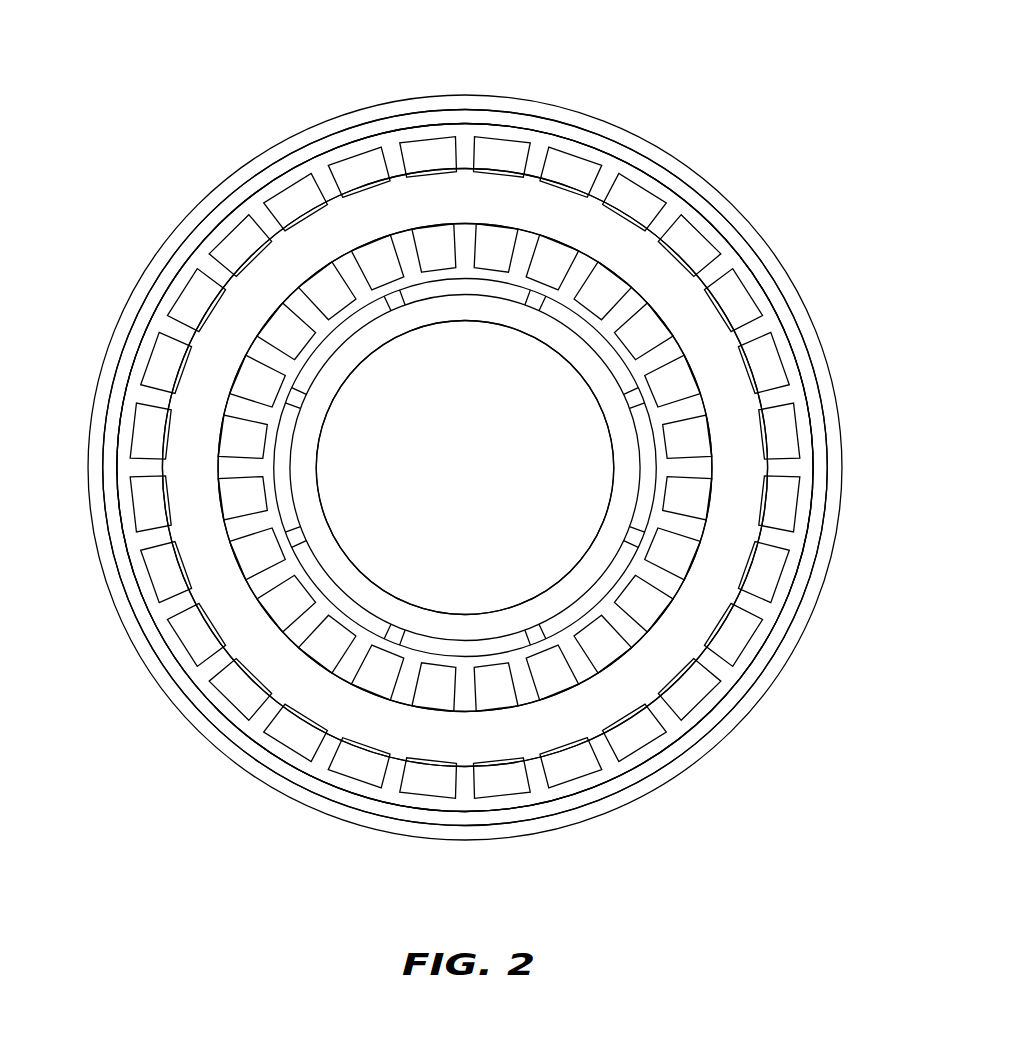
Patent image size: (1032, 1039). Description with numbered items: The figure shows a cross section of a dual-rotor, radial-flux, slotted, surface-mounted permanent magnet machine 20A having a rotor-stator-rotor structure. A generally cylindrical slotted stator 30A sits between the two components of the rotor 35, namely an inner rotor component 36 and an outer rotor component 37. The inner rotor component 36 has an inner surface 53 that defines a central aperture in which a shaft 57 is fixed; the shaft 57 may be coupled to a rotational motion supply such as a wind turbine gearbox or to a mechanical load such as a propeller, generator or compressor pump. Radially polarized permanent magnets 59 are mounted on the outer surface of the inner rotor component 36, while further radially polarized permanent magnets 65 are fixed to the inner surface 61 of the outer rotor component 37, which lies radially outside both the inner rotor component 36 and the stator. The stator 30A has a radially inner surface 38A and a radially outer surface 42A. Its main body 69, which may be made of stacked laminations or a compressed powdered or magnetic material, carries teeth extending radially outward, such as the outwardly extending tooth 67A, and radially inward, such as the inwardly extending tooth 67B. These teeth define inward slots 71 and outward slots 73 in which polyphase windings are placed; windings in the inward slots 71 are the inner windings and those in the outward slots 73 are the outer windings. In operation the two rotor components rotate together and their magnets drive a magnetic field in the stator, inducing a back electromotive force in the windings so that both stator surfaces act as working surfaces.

The permanent magnet machine 20A is at (728, 70).
The slotted stator 30A is at (463, 135).
The rotor 35 is at (272, 125).
The inner rotor component 36 is at (460, 630).
The outer rotor component 37 is at (197, 203).
The radially inner surface 38A is at (628, 345).
The radially outer surface 42A is at (672, 198).
The inner surface 53 is at (383, 582).
The shaft 57 is at (575, 465).
The permanent magnets 59 is at (283, 482).
The inner surface 61 is at (112, 490).
The permanent magnets 65 is at (545, 815).
The radially outwardly extending tooth 67A is at (725, 276).
The radially inwardly extending tooth 67B is at (440, 255).
The main body 69 is at (745, 495).
The inward slots 71 is at (305, 328).
The outward slots 73 is at (553, 165).